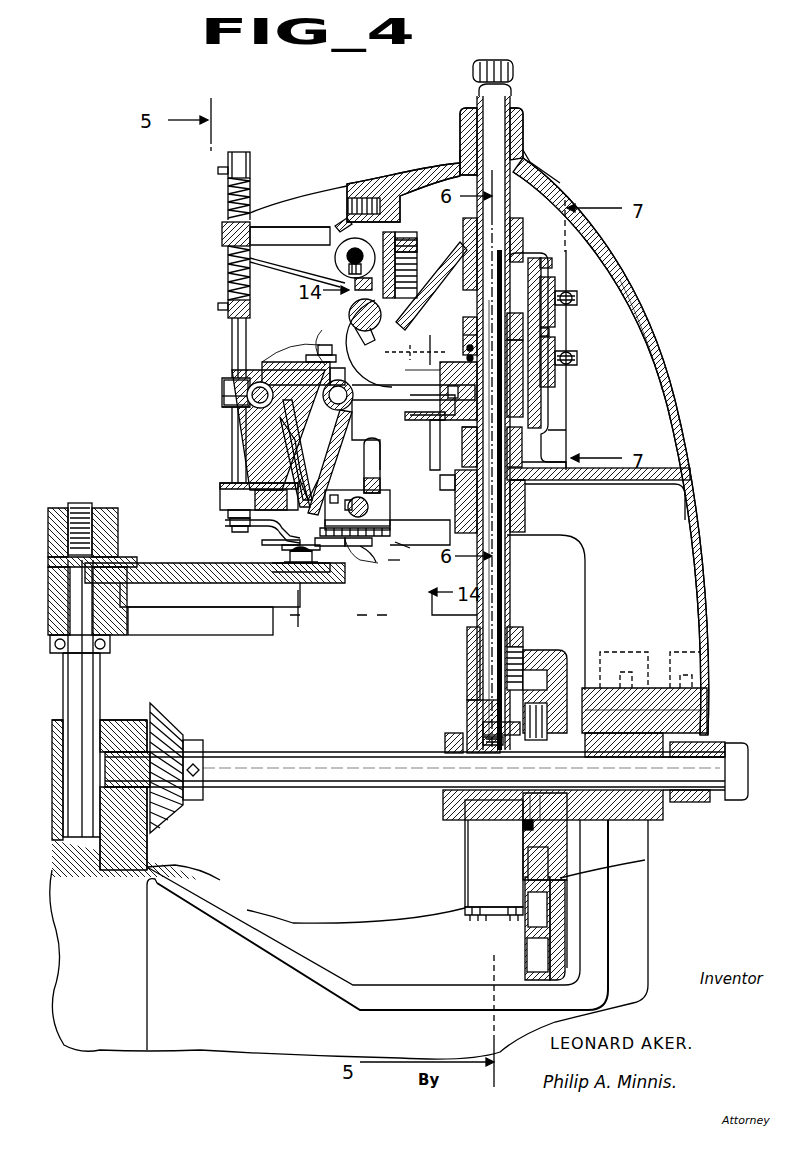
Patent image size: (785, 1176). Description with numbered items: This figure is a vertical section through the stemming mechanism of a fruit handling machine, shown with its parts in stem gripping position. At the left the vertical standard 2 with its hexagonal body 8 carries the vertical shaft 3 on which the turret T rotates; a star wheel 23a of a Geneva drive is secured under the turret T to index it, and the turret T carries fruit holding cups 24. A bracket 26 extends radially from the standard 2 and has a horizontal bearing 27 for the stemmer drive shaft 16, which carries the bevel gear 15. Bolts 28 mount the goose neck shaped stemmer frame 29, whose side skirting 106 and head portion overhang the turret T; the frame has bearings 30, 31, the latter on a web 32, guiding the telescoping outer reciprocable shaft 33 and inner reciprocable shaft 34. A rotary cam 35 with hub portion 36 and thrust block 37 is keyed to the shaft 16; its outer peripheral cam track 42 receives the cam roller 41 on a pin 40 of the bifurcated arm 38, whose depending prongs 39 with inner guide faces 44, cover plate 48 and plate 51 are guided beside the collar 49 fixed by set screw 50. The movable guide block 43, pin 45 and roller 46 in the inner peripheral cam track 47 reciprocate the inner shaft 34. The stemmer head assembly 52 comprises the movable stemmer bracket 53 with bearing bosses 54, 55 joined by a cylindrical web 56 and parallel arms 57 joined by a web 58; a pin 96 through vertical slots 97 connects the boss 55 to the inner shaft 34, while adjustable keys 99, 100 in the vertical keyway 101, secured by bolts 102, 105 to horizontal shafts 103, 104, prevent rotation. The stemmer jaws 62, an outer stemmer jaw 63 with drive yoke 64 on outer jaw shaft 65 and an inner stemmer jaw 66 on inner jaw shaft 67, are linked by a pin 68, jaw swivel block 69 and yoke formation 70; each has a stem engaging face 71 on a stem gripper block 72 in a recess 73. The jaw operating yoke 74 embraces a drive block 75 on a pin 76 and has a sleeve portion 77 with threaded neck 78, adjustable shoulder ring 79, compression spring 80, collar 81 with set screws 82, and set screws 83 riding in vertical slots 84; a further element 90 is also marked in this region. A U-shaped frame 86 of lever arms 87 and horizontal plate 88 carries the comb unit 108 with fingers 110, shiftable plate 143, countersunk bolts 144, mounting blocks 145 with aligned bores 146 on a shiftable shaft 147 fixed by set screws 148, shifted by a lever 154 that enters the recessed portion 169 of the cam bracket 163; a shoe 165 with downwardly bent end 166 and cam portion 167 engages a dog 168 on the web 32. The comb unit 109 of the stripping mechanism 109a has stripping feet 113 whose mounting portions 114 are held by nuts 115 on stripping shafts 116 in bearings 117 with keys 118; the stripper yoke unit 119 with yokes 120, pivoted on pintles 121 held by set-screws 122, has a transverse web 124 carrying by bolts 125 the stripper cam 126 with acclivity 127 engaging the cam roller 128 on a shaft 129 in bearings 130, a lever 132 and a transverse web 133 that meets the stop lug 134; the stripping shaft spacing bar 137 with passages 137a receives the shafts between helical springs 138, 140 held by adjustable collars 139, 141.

The vertical standard 2 is at (90, 1040).
The vertical shaft 3 is at (68, 688).
The hexagonal body 8 is at (55, 730).
The bevel gear 15 is at (183, 820).
The stemmer drive shaft 16 is at (360, 783).
The star wheel 23a is at (195, 638).
The fruit holding cups 24 is at (282, 585).
The bracket 26 is at (640, 912).
The horizontal bearing 27 is at (660, 810).
The bolts 28 is at (700, 676).
The stemmer frame 29 is at (712, 522).
The bearing 30 is at (525, 133).
The bearing 31 is at (526, 510).
The web 32 is at (610, 482).
The outer reciprocable shaft 33 is at (480, 96).
The inner reciprocable shaft 34 is at (509, 601).
The rotary cam 35 is at (610, 880).
The hub portion 36 is at (518, 807).
The thrust block 37 is at (501, 818).
The bifurcated arm 38 is at (467, 657).
The depending prongs 39 is at (466, 855).
The pin 40 is at (524, 646).
The cam roller 41 is at (540, 662).
The outer peripheral cam track 42 is at (554, 668).
The movable guide block 43 is at (467, 702).
The inner guide faces 44 is at (525, 886).
The pin 45 is at (476, 729).
The roller 46 is at (548, 702).
The inner peripheral cam track 47 is at (548, 716).
The cover plate 48 is at (468, 835).
The collar 49 is at (445, 798).
The set screw 50 is at (447, 740).
The plate 51 is at (497, 916).
The stemmer head assembly 52 is at (216, 387).
The movable stemmer bracket 53 is at (530, 255).
The bearing boss 54 is at (465, 228).
The bearing boss 55 is at (523, 457).
The cylindrical web 56 is at (553, 264).
The parallel arms 57 is at (318, 345).
The web 58 is at (315, 355).
The stemmer jaws 62 is at (297, 450).
The outer stemmer jaw 63 is at (330, 462).
The drive yoke 64 is at (413, 377).
The outer jaw shaft 65 is at (352, 390).
The inner stemmer jaw 66 is at (278, 430).
The inner jaw shaft 67 is at (238, 420).
The pin 68 is at (318, 378).
The jaw swivel block 69 is at (286, 445).
The yoke formation 70 is at (300, 365).
The stem engaging face 71 is at (270, 543).
The stem gripper block 72 is at (288, 508).
The recess 73 is at (304, 481).
The jaw operating yoke 74 is at (427, 445).
The drive block 75 is at (432, 421).
The pin 76 is at (422, 363).
The sleeve portion 77 is at (535, 400).
The threaded neck 78 is at (466, 348).
The adjustable shoulder ring 79 is at (466, 360).
The compression spring 80 is at (465, 337).
The collar 81 is at (465, 320).
The set screws 82 is at (512, 315).
The set screws 83 is at (470, 403).
The vertical slots 84 is at (458, 414).
The U-shaped frame 86 is at (420, 448).
The lever arms 87 is at (357, 493).
The horizontal plate 88 is at (362, 540).
The spring 90 is at (322, 330).
The pin 96 is at (516, 440).
The vertical slots 97 is at (523, 488).
The adjustable key 99 is at (556, 281).
The adjustable key 100 is at (556, 346).
The vertical keyway 101 is at (556, 332).
The bolt 102 is at (579, 300).
The horizontal shaft 103 is at (578, 294).
The horizontal shaft 104 is at (572, 368).
The bolt 105 is at (578, 358).
The side skirting 106 is at (645, 336).
The comb unit 108 is at (300, 519).
The comb unit 109 is at (280, 531).
The stripping mechanism 109a is at (210, 506).
The fingers 110 is at (330, 546).
The stripping feet 113 is at (292, 546).
The mounting portion 114 is at (230, 519).
The nuts 115 is at (232, 529).
The stripping shaft 116 is at (232, 342).
The bearings 117 is at (224, 399).
The key 118 is at (238, 432).
The stripper yoke unit 119 is at (300, 192).
The yokes 120 is at (270, 247).
The pintles 121 is at (345, 258).
The set-screws 122 is at (330, 278).
The transverse web 124 is at (418, 262).
The bolts 125 is at (418, 246).
The stripper cam 126 is at (399, 318).
The acclivity 127 is at (367, 287).
The cam roller 128 is at (352, 312).
The shaft 129 is at (352, 328).
The bearings 130 is at (386, 337).
The lever 132 is at (385, 182).
The transverse web 133 is at (336, 232).
The stop lug 134 is at (350, 206).
The stripping shaft spacing bar 137 is at (222, 236).
The passages 137a is at (258, 222).
The helical spring 138 is at (228, 272).
The adjustable collar 139 is at (228, 312).
The helical spring 140 is at (228, 193).
The adjustable collar 141 is at (250, 166).
The shiftable plate 143 is at (391, 532).
The countersunk bolts 144 is at (356, 546).
The mounting block 145 is at (344, 486).
The aligned bores 146 is at (346, 500).
The shiftable shaft 147 is at (376, 520).
The set screws 148 is at (370, 509).
The lever 154 is at (381, 474).
The cam bracket 163 is at (461, 444).
The shoe 165 is at (420, 532).
The downwardly bent end 166 is at (405, 542).
The cam portion 167 is at (400, 560).
The dog 168 is at (455, 492).
The recessed portion 169 is at (425, 428).
The turret T is at (192, 566).